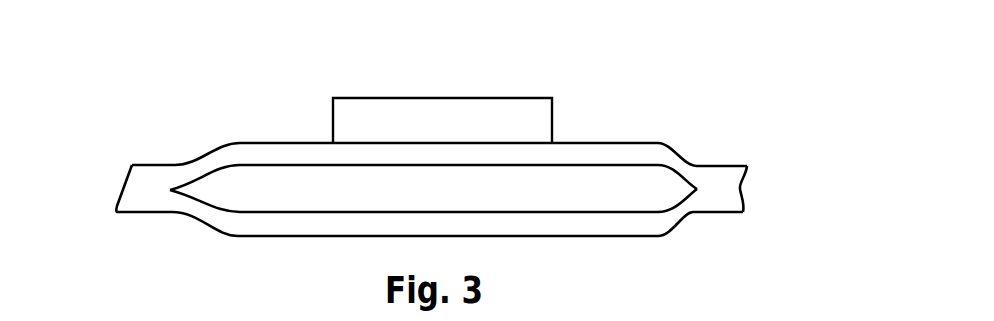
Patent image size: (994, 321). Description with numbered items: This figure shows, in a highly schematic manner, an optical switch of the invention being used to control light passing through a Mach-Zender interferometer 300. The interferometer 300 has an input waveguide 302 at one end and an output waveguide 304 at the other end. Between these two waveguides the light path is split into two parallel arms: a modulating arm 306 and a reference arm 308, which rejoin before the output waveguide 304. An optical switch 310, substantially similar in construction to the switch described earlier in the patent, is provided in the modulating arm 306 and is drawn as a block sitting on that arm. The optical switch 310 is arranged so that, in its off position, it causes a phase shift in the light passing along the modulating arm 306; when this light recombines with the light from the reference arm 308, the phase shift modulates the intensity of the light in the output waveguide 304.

The Mach-Zender interferometer 300 is at (121, 148).
The input waveguide 302 is at (142, 185).
The output waveguide 304 is at (727, 192).
The modulating arm 306 is at (618, 148).
The reference arm 308 is at (612, 223).
The optical switch 310 is at (438, 127).